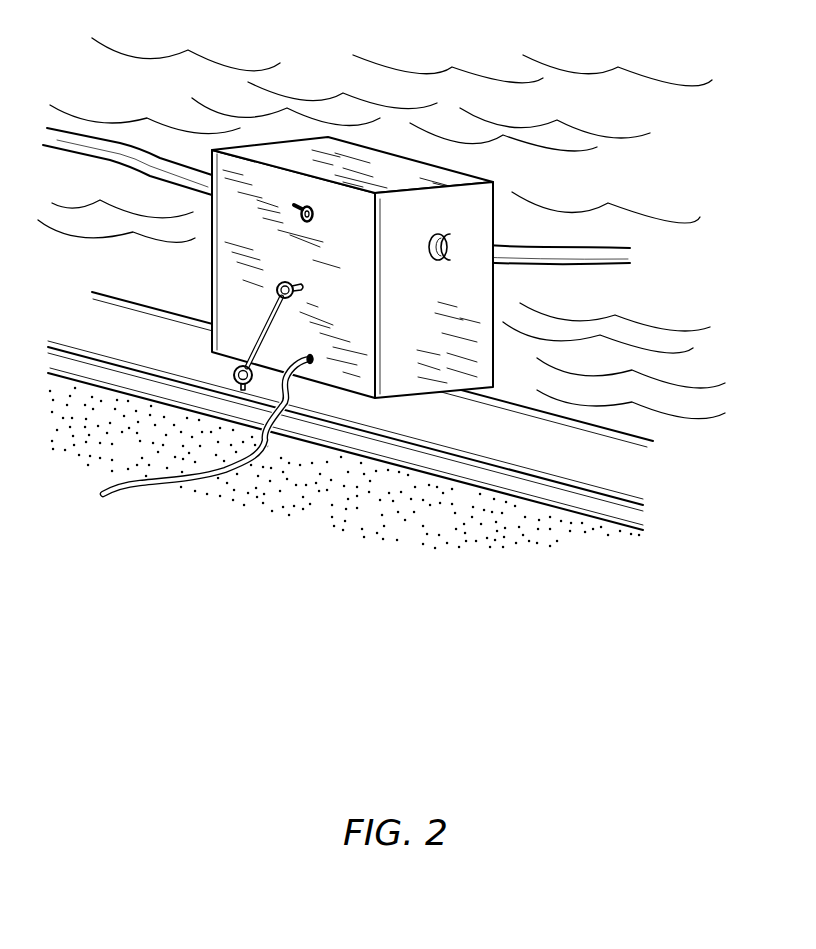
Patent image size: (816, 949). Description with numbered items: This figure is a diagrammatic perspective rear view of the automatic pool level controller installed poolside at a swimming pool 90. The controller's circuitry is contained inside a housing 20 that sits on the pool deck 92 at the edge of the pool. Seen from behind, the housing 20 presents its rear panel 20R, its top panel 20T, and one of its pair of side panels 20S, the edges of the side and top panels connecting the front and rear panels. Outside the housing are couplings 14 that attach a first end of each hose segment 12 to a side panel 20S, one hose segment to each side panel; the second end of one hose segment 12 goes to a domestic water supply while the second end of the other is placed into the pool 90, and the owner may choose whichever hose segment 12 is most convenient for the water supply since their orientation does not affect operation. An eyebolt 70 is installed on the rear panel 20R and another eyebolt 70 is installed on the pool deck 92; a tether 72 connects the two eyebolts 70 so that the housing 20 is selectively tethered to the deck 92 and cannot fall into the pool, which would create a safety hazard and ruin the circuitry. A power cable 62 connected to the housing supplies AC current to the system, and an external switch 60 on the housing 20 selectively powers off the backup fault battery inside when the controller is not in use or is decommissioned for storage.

The hose segment 12 is at (158, 166).
The coupling 14 is at (440, 262).
The housing 20 is at (341, 267).
The rear panel 20R is at (245, 170).
The top panel 20T is at (382, 165).
The side panel 20S is at (475, 286).
The external switch 60 is at (315, 210).
The power cable 62 is at (290, 394).
The eyebolt 70 is at (288, 279).
The tether 72 is at (272, 327).
The swimming pool 90 is at (599, 365).
The deck 92 is at (564, 458).